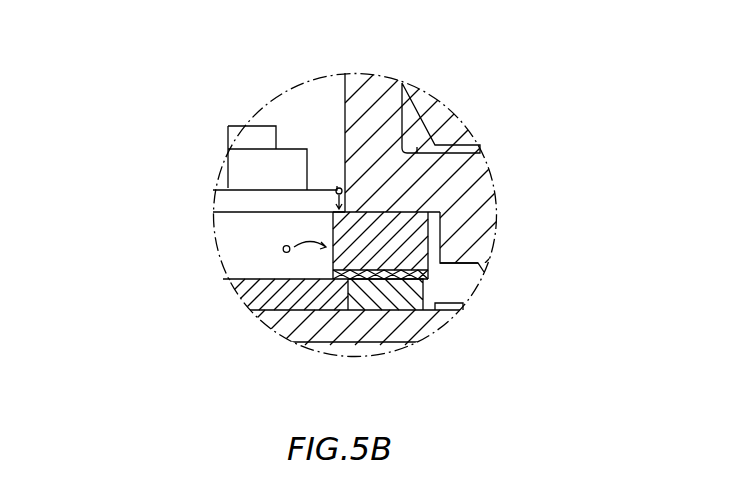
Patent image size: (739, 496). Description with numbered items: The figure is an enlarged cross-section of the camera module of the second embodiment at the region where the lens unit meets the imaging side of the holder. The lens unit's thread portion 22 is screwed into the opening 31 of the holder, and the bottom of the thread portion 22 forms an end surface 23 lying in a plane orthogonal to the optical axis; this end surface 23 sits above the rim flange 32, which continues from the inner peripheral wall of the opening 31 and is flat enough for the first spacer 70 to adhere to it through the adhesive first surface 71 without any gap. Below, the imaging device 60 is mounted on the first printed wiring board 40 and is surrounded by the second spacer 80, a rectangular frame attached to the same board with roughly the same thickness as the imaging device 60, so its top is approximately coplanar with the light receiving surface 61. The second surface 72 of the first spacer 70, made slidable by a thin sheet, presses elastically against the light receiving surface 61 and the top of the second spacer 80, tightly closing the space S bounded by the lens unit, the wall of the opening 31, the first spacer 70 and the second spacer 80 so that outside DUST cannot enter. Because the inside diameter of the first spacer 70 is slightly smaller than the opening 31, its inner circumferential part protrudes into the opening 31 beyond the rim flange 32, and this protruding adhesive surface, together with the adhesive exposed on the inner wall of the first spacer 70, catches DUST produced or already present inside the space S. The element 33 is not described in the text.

The thread portion 22 is at (300, 115).
The end surface 23 is at (320, 188).
The space S is at (277, 205).
The dust DUST is at (283, 247).
The light receiving surface 61 is at (190, 245).
The imaging device 60 is at (307, 293).
The first printed wiring board 40 is at (337, 323).
The second spacer 80 is at (397, 292).
The first spacer 70 is at (380, 243).
The second surface 72 is at (392, 275).
The first surface 71 is at (432, 212).
The rim flange 32 is at (420, 188).
The seal base portion 33 is at (447, 205).
The opening 31 is at (407, 92).